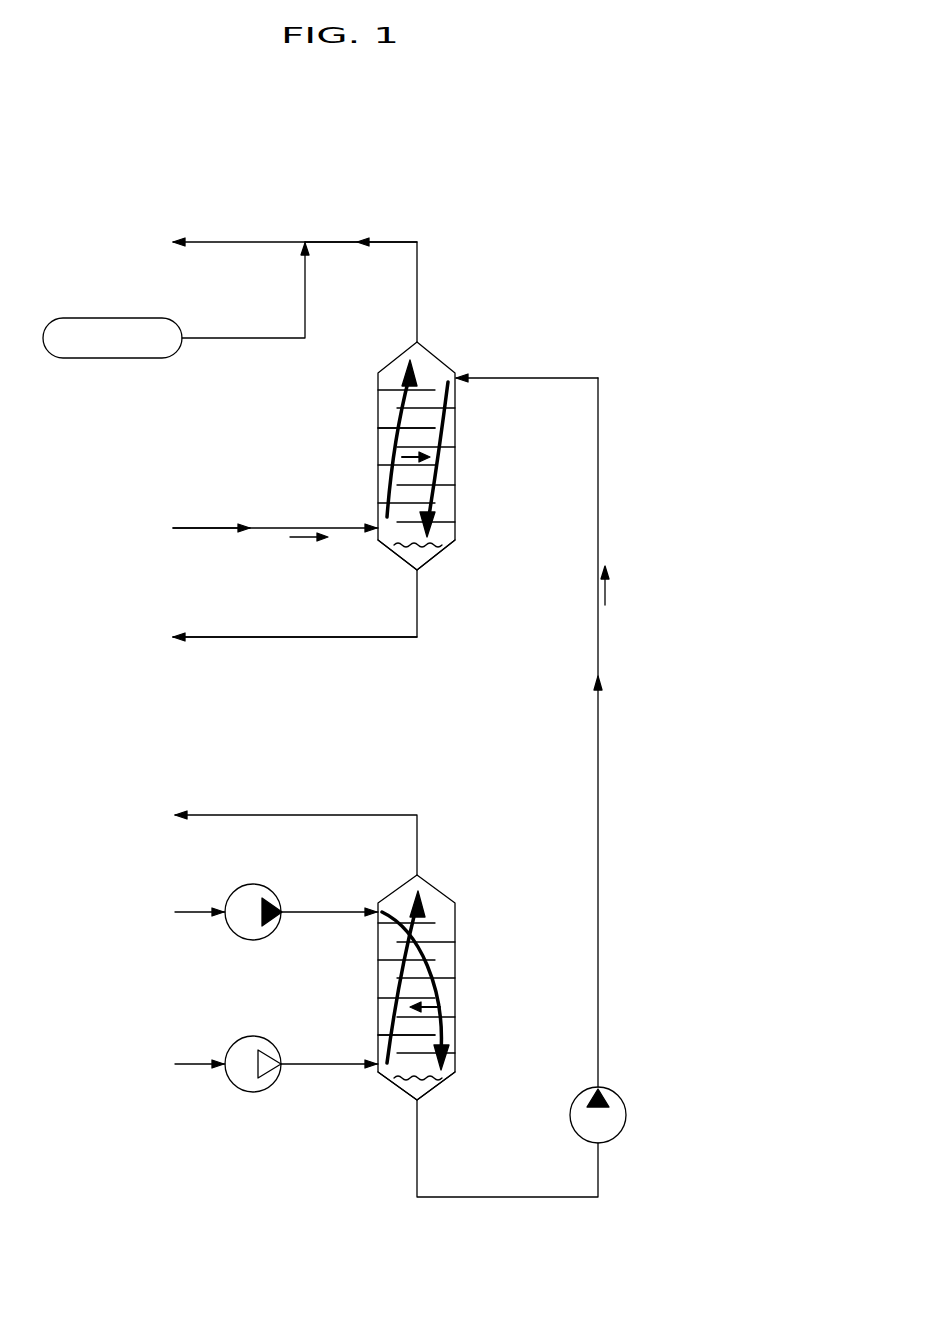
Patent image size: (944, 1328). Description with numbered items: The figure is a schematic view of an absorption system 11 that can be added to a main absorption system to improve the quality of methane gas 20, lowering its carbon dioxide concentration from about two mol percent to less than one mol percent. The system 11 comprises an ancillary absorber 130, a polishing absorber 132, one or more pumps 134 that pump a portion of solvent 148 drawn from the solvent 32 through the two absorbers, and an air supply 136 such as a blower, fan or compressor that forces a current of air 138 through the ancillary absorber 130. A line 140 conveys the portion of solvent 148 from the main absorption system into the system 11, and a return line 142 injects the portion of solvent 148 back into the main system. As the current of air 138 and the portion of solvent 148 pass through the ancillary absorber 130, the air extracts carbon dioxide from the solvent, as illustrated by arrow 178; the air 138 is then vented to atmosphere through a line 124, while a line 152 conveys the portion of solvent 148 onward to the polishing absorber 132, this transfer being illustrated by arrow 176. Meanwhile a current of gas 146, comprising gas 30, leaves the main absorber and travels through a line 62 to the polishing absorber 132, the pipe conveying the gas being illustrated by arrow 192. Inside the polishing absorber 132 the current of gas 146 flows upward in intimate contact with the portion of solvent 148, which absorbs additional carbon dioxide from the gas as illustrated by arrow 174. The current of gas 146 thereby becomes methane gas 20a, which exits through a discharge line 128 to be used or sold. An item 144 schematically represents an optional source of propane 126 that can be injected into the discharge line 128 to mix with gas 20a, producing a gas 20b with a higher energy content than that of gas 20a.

The absorption system 11 is at (624, 186).
The methane gas 20 is at (212, 528).
The methane gas 20a is at (358, 240).
The gas 20b is at (186, 238).
The gas 30 is at (393, 491).
The solvent 32 is at (418, 557).
The line 62 is at (192, 532).
The line 124 is at (258, 815).
The propane gas 126 is at (305, 296).
The discharge line 128 is at (250, 240).
The ancillary absorber 130 is at (378, 969).
The polishing absorber 132 is at (378, 439).
The pump 134 is at (240, 887).
The air supply 136 is at (242, 1093).
The current of air 138 is at (400, 1027).
The line 140 is at (188, 914).
The return line 142 is at (262, 638).
The source of propane 144 is at (108, 358).
The current of gas 146 is at (400, 412).
The portion of solvent 148 is at (460, 376).
The line 152 is at (598, 850).
The arrow 174 is at (408, 461).
The arrow 176 is at (607, 590).
The arrow 178 is at (428, 1009).
The arrow 192 is at (304, 540).